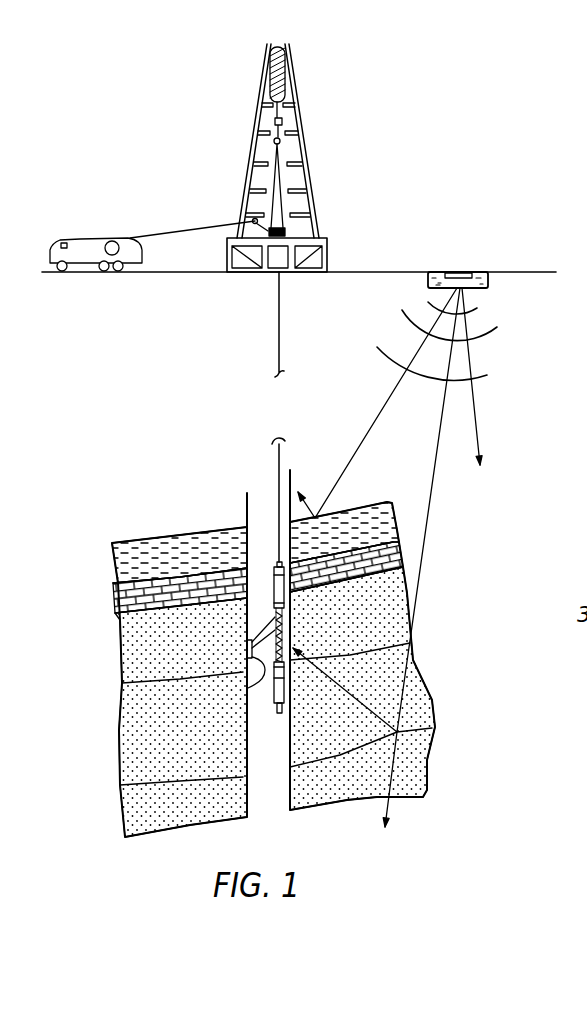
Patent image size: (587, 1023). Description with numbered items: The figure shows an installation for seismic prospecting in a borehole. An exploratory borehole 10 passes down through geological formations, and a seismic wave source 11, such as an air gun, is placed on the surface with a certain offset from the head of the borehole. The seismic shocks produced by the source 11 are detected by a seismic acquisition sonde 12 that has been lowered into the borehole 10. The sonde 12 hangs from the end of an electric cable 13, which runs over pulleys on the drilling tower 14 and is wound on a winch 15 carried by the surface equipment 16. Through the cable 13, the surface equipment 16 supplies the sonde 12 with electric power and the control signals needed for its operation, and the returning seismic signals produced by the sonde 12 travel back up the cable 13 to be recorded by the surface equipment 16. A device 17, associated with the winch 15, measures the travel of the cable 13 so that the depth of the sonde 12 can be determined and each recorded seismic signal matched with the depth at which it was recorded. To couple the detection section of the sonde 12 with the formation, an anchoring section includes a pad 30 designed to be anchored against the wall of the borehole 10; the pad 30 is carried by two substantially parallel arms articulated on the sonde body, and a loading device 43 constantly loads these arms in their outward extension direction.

The exploratory borehole 10 is at (253, 730).
The seismic wave source 11 is at (458, 272).
The seismic acquisition sonde 12 is at (274, 578).
The electric cable 13 is at (279, 320).
The drilling tower 14 is at (312, 165).
The winch 15 is at (112, 270).
The surface equipment 16 is at (78, 268).
The cable travel measuring device 17 is at (130, 238).
The pad 30 is at (247, 648).
The loading device 43 is at (247, 688).